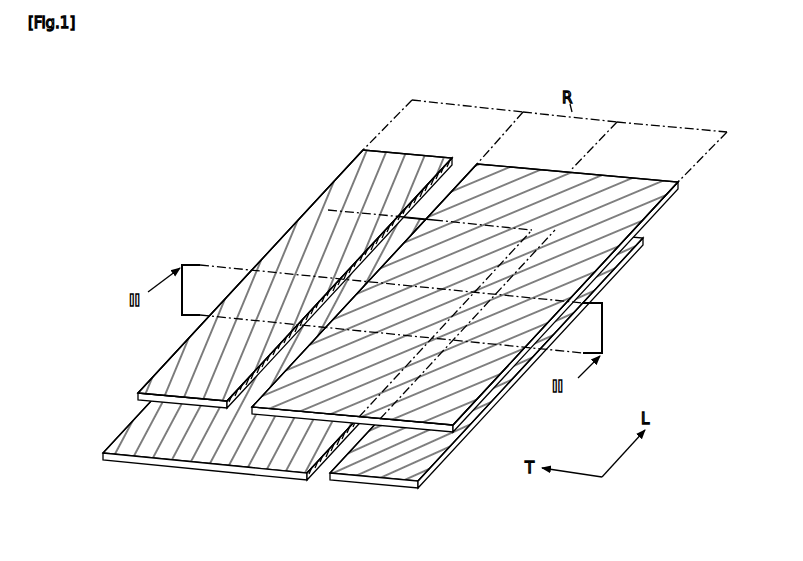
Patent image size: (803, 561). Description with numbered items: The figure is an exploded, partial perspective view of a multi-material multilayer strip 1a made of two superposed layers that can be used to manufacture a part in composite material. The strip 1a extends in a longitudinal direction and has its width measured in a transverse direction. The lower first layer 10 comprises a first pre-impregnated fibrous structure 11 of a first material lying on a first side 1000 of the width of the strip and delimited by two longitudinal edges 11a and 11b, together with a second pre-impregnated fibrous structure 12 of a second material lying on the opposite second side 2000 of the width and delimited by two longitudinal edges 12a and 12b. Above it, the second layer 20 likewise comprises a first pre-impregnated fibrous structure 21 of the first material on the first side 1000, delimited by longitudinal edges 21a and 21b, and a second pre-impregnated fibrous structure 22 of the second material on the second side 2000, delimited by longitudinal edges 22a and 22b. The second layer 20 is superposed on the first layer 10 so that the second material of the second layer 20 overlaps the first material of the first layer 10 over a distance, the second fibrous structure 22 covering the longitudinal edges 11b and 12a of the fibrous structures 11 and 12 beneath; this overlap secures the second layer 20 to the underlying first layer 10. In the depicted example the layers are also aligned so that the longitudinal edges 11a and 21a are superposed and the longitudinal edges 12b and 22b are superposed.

The multilayer strip 1a is at (410, 320).
The first layer 10 is at (370, 363).
The first pre-impregnated fibrous structure 11 is at (314, 358).
The longitudinal edge 11a is at (121, 436).
The longitudinal edge 11b is at (308, 475).
The second pre-impregnated fibrous structure 12 is at (479, 372).
The longitudinal edge 12a is at (330, 476).
The longitudinal edge 12b is at (445, 455).
The second layer 20 is at (430, 278).
The first pre-impregnated fibrous structure 21 is at (295, 266).
The longitudinal edge 21a is at (168, 362).
The longitudinal edge 21b is at (450, 158).
The second pre-impregnated fibrous structure 22 is at (471, 278).
The longitudinal edge 22a is at (469, 160).
The longitudinal edge 22b is at (648, 222).
The first side 1000 is at (473, 101).
The second side 2000 is at (668, 120).